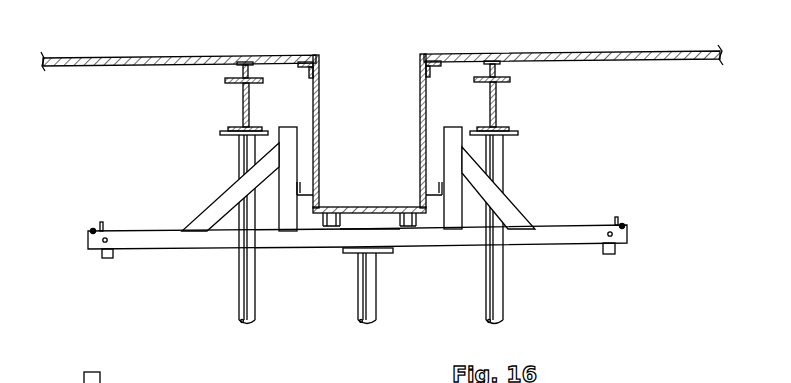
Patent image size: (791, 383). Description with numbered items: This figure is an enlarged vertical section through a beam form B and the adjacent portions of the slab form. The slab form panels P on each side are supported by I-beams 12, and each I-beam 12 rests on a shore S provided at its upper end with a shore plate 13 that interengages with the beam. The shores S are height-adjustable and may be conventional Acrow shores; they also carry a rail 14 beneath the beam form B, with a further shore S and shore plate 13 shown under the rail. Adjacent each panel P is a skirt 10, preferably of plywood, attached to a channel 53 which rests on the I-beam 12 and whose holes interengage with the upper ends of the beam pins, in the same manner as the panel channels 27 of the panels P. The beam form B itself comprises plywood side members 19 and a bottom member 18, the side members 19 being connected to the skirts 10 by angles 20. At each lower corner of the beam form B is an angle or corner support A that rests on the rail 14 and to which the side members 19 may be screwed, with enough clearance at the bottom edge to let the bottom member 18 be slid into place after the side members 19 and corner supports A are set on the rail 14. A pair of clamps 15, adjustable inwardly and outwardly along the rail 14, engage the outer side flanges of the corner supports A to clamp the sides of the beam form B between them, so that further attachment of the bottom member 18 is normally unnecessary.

The panel P is at (382, 40).
The skirt 10 is at (276, 56).
The channel 27 is at (238, 72).
The channel 53 is at (254, 81).
The angle 20 is at (306, 69).
The I-beam 12 is at (244, 101).
The shore plate 13 is at (221, 131).
The shore S is at (237, 160).
The beam form B is at (374, 130).
The side member 19 is at (321, 152).
The bottom member 18 is at (371, 206).
The clamp 15 is at (288, 218).
The angle or corner support A is at (307, 222).
The rail 14 is at (533, 240).